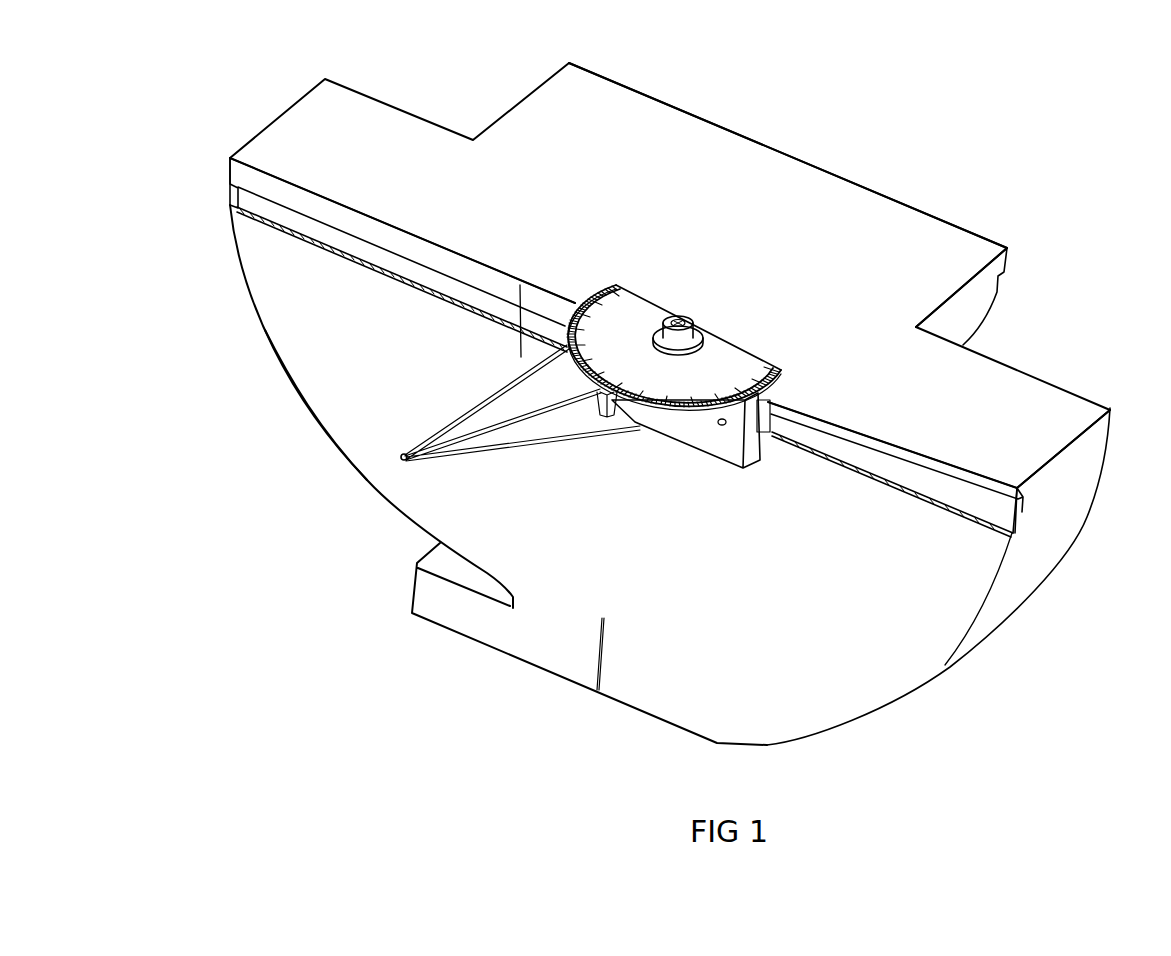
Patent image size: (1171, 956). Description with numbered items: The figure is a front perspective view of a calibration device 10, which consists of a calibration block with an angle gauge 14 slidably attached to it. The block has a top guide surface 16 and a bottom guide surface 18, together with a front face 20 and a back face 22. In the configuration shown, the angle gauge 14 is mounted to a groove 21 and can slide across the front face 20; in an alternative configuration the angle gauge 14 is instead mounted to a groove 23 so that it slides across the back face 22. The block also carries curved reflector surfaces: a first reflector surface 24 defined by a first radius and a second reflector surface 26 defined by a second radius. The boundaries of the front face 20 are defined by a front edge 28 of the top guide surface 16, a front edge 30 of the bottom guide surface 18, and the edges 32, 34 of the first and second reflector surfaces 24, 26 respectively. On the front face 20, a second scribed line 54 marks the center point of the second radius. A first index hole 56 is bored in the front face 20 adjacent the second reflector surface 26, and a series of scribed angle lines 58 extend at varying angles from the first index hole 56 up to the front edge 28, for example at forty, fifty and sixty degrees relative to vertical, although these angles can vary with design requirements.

The calibration device 10 is at (1062, 120).
The angle gauge 14 is at (697, 458).
The top guide surface 16 is at (736, 187).
The bottom guide surface 18 is at (478, 648).
The front face 20 is at (306, 330).
The groove 21 is at (947, 497).
The back face 22 is at (958, 216).
The groove 23 is at (997, 290).
The first reflector surface 24 is at (1062, 508).
The second reflector surface 26 is at (235, 214).
The front edge of the top guide surface 28 is at (365, 208).
The front edge of the bottom guide surface 30 is at (657, 710).
The edge of the first reflector surface 32 is at (970, 640).
The edge of the second reflector surface 34 is at (295, 398).
The second scribed line 54 is at (523, 290).
The first index hole 56 is at (402, 462).
The scribed angle lines 58 is at (447, 433).